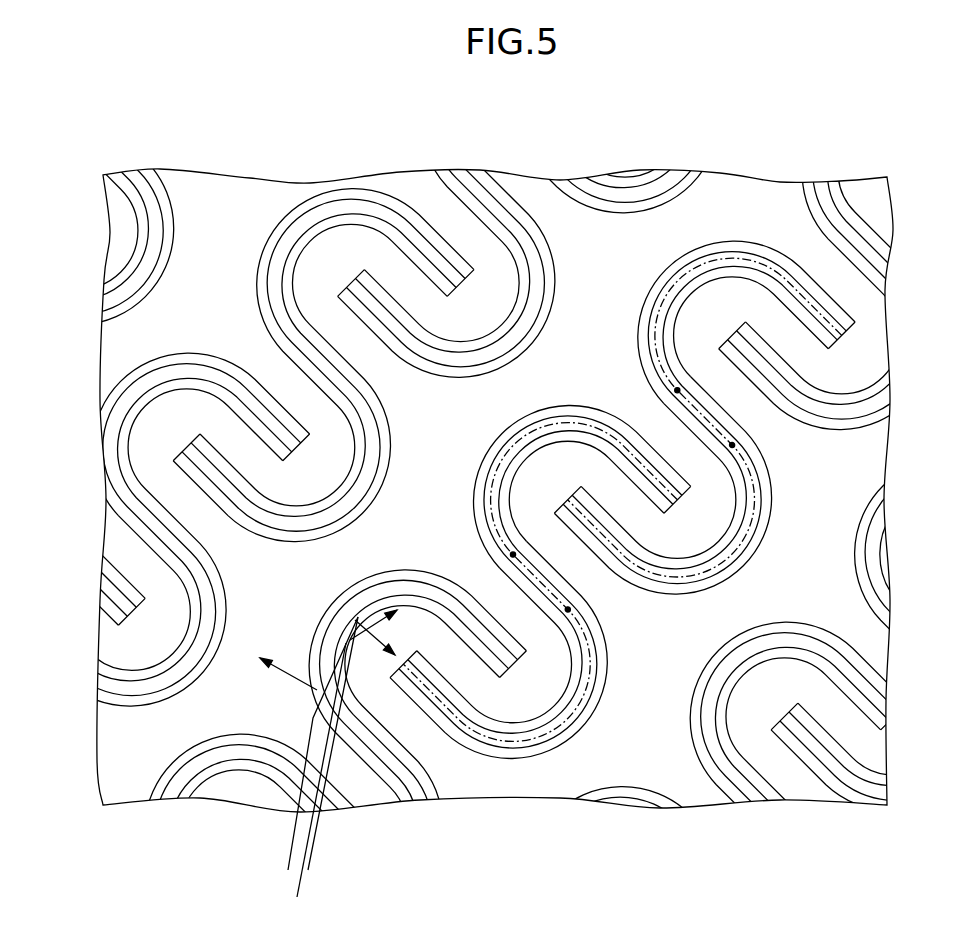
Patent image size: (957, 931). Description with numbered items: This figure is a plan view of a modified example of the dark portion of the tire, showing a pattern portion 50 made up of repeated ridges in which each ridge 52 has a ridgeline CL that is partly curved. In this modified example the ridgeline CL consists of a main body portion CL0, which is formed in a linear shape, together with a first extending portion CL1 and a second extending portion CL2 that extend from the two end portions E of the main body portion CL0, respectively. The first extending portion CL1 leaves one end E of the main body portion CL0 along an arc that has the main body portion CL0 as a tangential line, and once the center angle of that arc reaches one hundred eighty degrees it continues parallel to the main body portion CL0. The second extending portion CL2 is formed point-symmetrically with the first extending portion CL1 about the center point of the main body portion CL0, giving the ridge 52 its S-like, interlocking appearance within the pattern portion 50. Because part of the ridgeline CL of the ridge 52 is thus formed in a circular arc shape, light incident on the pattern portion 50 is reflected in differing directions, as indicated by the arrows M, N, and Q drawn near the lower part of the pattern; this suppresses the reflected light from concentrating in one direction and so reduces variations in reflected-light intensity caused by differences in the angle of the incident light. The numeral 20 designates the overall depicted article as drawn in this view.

The stretchable wiring board 20 is at (895, 136).
The pattern portion 50 is at (478, 465).
The ridge 52 is at (622, 499).
The ridgeline CL is at (746, 322).
The main body portion CL0 is at (705, 417).
The first extending portion CL1 is at (709, 410).
The second extending portion CL2 is at (700, 424).
The end portion E is at (705, 418).
The arrow M is at (290, 847).
The arrow N is at (295, 885).
The arrow Q is at (318, 843).